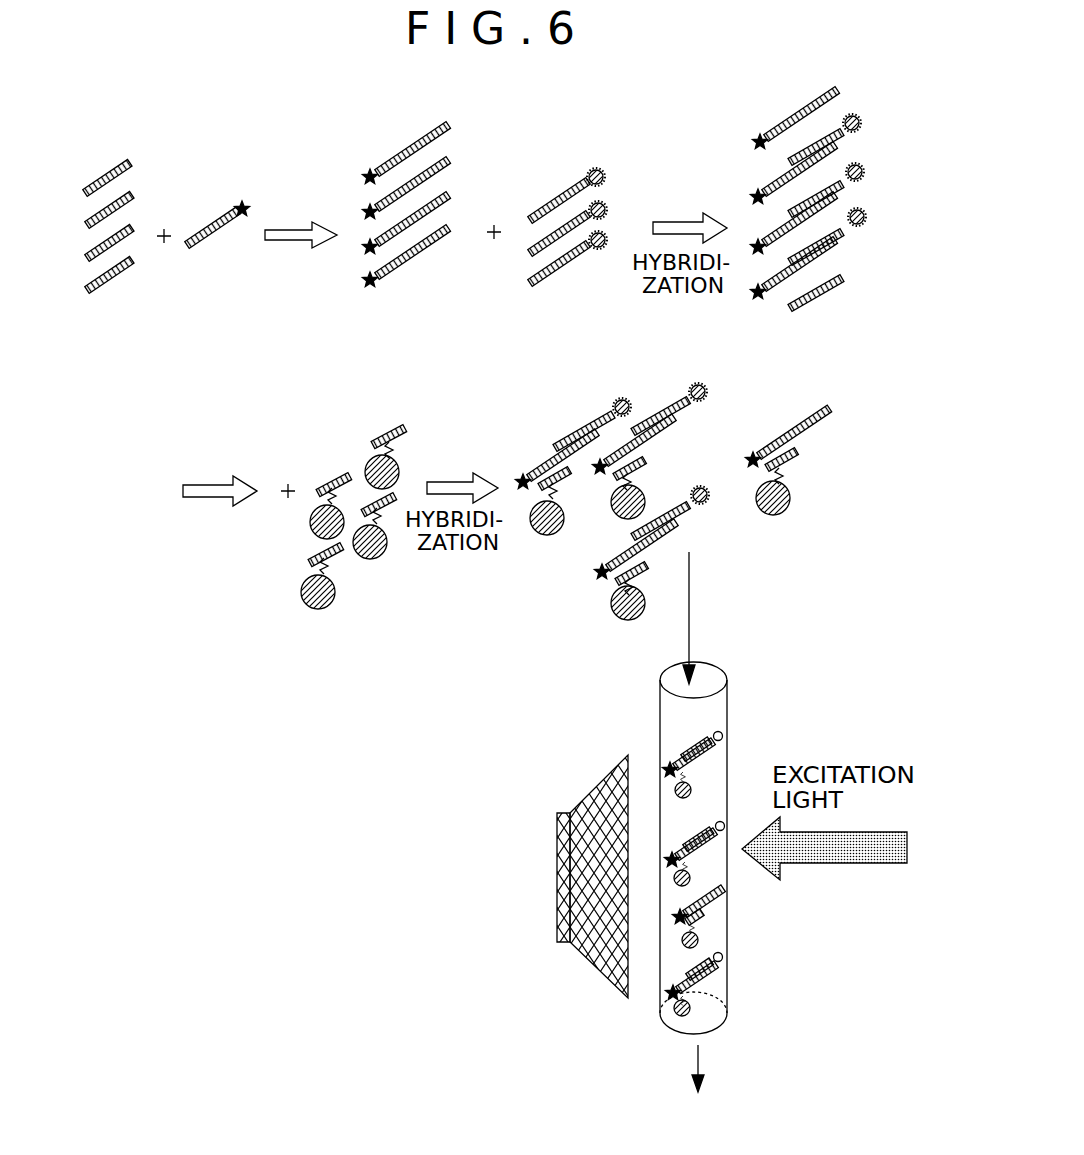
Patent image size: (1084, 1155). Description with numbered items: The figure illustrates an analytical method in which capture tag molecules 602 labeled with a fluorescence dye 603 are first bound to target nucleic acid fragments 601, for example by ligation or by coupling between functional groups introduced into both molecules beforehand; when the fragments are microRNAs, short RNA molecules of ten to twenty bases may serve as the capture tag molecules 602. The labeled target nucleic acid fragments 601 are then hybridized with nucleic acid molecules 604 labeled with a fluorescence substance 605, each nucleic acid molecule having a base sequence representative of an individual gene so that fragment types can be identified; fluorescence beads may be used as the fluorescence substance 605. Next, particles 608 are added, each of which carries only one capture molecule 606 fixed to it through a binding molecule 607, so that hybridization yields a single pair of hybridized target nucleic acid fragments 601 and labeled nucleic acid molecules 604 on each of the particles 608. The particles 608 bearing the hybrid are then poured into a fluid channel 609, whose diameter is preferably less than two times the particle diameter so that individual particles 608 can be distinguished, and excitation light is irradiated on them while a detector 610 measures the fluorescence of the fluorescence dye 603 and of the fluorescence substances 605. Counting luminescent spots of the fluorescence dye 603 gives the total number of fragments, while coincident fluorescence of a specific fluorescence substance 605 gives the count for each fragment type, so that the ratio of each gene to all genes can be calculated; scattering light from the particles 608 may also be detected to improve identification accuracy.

The target nucleic acid fragments 601 is at (111, 294).
The capture tag molecules 602 is at (210, 244).
The fluorescence dye 603 is at (239, 203).
The nucleic acid molecules 604 is at (552, 200).
The fluorescence substance 605 is at (604, 168).
The capture molecule 606 is at (388, 428).
The binding molecule 607 is at (399, 458).
The particles 608 is at (363, 458).
The fluid channel 609 is at (728, 702).
The detector 610 is at (591, 803).